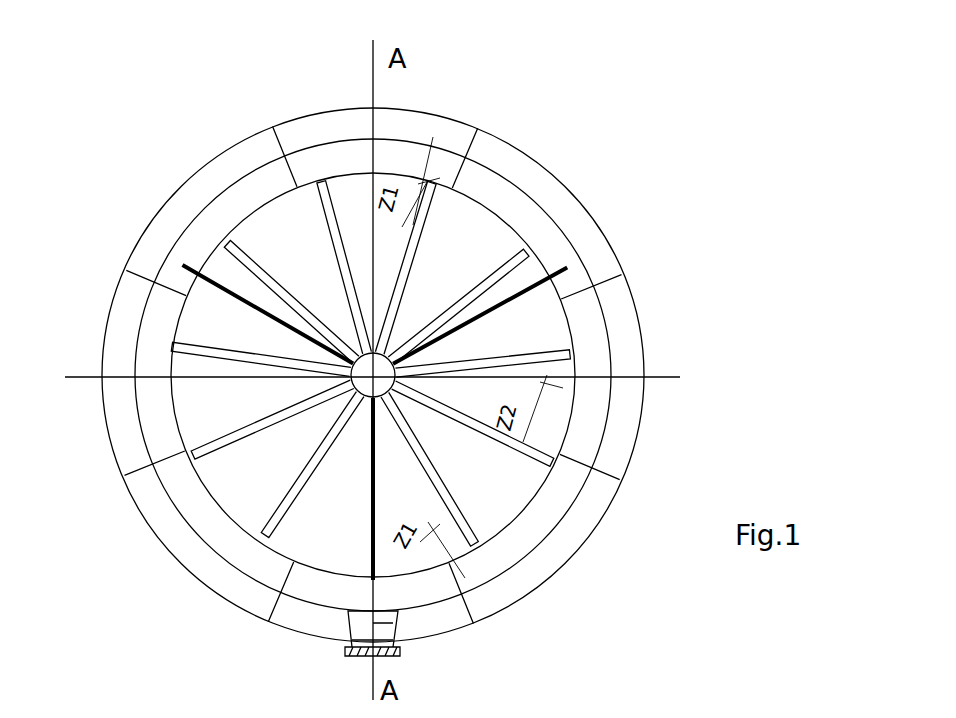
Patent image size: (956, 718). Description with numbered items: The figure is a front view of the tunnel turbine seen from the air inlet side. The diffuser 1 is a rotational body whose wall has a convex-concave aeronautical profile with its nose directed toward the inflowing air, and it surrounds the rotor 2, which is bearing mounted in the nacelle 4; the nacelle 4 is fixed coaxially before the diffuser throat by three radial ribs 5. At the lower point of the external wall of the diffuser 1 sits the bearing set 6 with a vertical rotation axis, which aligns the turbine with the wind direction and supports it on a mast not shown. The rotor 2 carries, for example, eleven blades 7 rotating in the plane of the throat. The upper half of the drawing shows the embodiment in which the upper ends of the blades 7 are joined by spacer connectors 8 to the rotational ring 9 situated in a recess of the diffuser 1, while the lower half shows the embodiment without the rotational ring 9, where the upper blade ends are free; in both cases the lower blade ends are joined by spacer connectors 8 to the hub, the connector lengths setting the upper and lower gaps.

The diffuser 1 is at (233, 552).
The rotor 2 is at (313, 462).
The nacelle 4 is at (392, 392).
The radial ribs 5 is at (434, 341).
The bearing set 6 is at (400, 617).
The blades 7 is at (445, 308).
The spacer connectors 8 is at (428, 184).
The rotational ring 9 is at (395, 324).